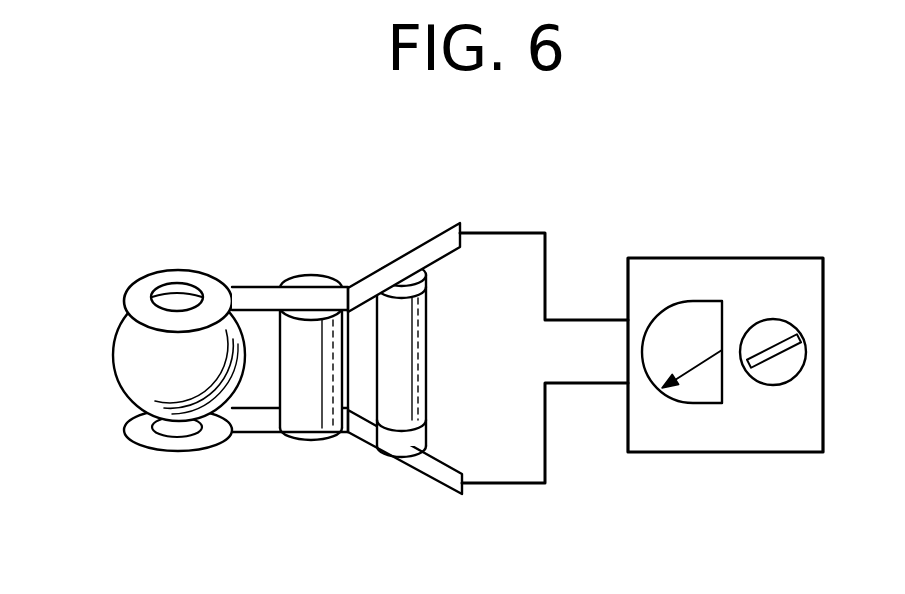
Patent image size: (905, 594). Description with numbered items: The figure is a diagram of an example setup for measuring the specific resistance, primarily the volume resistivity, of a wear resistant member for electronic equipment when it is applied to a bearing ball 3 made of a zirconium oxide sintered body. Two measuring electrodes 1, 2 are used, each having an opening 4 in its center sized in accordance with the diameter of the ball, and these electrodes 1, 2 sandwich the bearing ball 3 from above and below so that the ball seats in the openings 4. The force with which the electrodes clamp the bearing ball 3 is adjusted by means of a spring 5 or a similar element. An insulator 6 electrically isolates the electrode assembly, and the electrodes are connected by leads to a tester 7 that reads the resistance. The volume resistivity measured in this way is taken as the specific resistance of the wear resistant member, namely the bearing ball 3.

The measuring electrode 1 is at (140, 288).
The measuring electrode 2 is at (142, 432).
The bearing ball 3 is at (132, 363).
The opening 4 is at (183, 288).
The spring 5 is at (405, 360).
The insulator 6 is at (308, 423).
The tester 7 is at (730, 257).